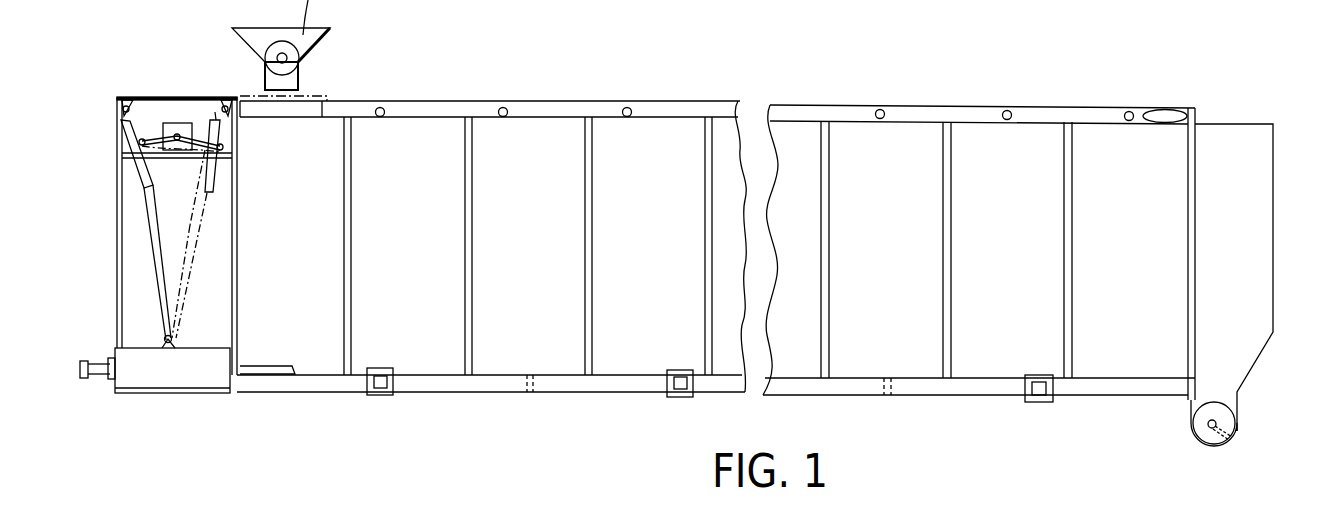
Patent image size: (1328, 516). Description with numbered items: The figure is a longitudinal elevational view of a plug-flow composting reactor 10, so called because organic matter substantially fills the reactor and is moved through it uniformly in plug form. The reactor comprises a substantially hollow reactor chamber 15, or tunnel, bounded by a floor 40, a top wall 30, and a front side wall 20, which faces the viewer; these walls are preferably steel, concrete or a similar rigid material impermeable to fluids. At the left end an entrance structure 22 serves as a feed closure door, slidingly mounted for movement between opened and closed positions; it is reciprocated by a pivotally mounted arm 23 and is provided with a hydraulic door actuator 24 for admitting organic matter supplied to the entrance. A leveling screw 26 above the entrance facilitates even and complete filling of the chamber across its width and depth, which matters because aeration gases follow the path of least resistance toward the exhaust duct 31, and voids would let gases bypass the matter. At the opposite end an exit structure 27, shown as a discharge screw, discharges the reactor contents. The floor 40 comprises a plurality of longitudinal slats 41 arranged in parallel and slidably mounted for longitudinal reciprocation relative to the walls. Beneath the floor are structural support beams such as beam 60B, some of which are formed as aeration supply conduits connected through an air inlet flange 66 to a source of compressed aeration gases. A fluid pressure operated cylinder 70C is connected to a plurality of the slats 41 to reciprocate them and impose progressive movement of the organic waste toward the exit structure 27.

The plug-flow composting reactor 10 is at (977, 79).
The reactor chamber 15 is at (489, 79).
The front side wall 20 is at (648, 358).
The entrance structure 22 is at (130, 140).
The pivotally mounted arm 23 is at (170, 343).
The hydraulic door actuator 24 is at (178, 127).
The leveling screw 26 is at (290, 60).
The exit structure 27 is at (1251, 369).
The top wall 30 is at (567, 110).
The exhaust duct 31 is at (1162, 114).
The floor 40 is at (603, 383).
The longitudinal slats 41 is at (275, 366).
The structural support beam 60B is at (530, 393).
The air inlet flange 66 is at (383, 384).
The cylinder 70C is at (88, 378).